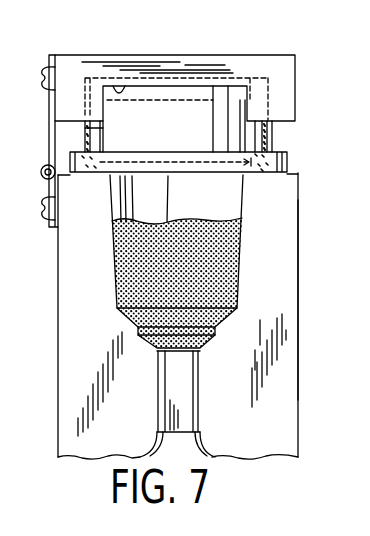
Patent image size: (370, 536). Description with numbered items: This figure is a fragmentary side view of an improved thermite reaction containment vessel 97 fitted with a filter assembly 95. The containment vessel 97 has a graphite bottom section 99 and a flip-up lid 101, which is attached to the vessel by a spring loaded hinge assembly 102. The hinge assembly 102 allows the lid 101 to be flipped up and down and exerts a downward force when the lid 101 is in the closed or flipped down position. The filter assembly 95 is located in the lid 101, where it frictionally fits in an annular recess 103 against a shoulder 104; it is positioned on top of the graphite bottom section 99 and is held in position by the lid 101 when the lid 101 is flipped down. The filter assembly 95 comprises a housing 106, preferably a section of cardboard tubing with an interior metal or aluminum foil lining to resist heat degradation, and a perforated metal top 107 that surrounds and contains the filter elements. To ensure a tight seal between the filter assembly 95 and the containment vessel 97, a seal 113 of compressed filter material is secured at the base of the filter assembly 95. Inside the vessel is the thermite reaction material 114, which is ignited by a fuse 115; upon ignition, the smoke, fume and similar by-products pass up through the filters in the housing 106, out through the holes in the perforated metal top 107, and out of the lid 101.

The filter assembly 95 is at (273, 80).
The thermite reaction containment vessel 97 is at (299, 362).
The graphite bottom section 99 is at (288, 294).
The flip-up lid 101 is at (65, 55).
The spring loaded hinge assembly 102 is at (41, 170).
The annular recess 103 is at (103, 98).
The shoulder 104 is at (117, 92).
The housing 106 is at (272, 137).
The perforated metal top 107 is at (171, 78).
The seal 113 is at (286, 166).
The thermite reaction material 114 is at (240, 262).
The fuse 115 is at (171, 206).